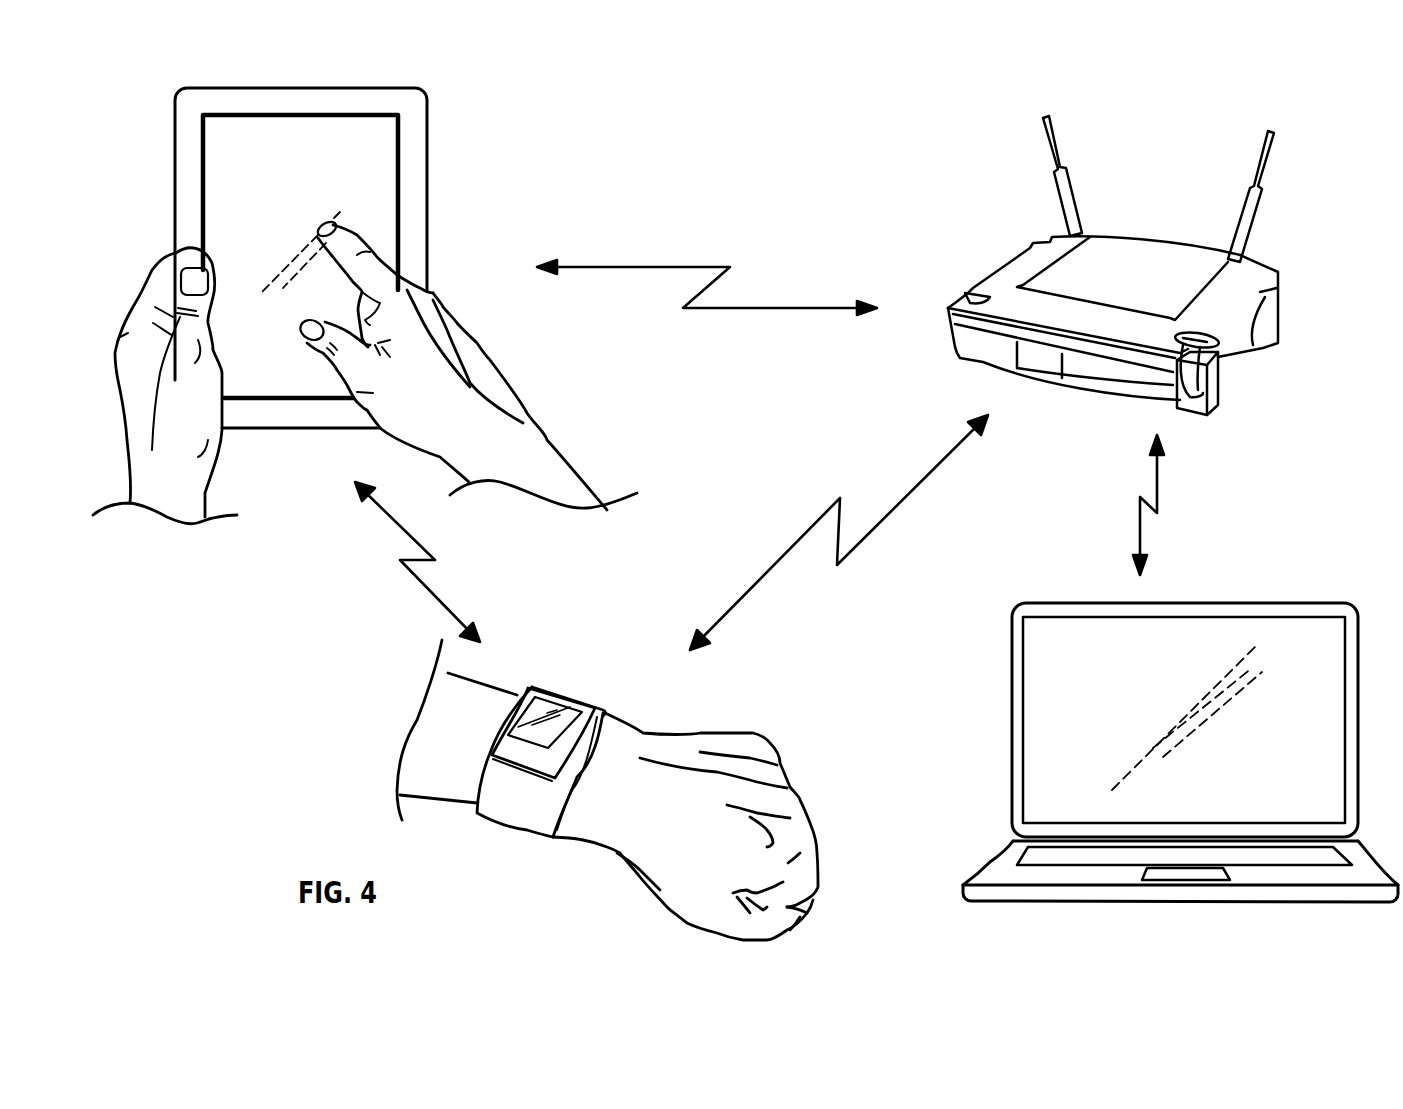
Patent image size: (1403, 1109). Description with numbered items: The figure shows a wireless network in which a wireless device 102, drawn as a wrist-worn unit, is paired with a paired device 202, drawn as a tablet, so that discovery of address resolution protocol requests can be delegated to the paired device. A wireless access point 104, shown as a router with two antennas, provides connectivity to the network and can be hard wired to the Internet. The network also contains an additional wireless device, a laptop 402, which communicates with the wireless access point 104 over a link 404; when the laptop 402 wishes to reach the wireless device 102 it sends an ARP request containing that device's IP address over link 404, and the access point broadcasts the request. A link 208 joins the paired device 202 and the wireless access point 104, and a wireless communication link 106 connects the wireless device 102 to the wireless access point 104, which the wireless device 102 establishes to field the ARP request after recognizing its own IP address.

The wireless device 102 is at (562, 690).
The wireless access point 104 is at (1280, 283).
The wireless communication link 106 is at (803, 535).
The paired device 202 is at (427, 157).
The wireless communication link 208 is at (707, 267).
The laptop 402 is at (1327, 603).
The link 404 is at (1157, 500).